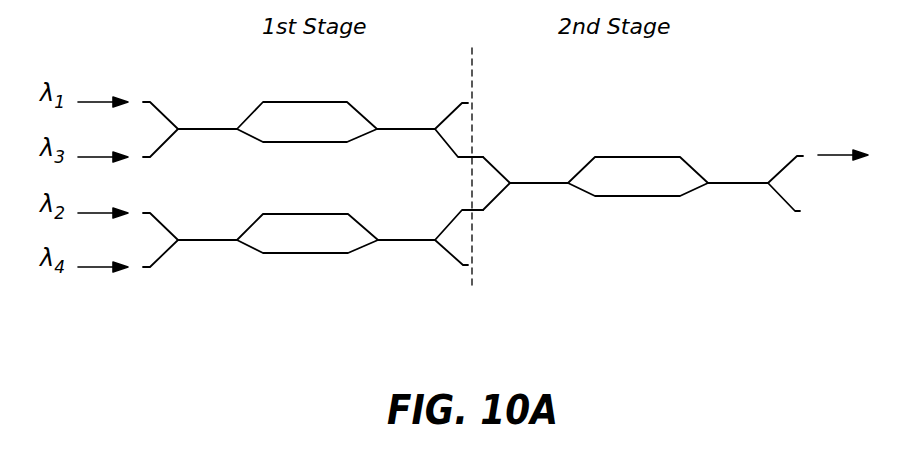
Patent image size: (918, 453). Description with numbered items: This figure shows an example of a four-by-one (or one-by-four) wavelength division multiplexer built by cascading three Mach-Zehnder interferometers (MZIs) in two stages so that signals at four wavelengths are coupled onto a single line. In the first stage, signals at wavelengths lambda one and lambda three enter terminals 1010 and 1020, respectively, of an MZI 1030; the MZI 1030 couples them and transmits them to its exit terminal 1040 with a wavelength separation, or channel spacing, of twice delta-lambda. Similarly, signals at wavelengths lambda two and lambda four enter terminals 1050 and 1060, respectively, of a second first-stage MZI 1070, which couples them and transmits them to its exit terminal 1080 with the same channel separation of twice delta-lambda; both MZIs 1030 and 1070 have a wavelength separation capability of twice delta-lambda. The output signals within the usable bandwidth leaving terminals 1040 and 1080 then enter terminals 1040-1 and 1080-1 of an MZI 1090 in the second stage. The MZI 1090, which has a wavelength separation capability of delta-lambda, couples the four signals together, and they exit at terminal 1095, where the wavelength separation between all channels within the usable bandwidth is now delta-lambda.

The terminal 1010 is at (150, 102).
The terminal 1020 is at (150, 157).
The MZI 1030 is at (283, 148).
The exit terminal 1040 is at (458, 157).
The terminal 1050 is at (150, 213).
The terminal 1060 is at (150, 267).
The MZI 1070 is at (285, 267).
The exit terminal 1080 is at (460, 210).
The terminal 1040-1 is at (483, 157).
The terminal 1080-1 is at (483, 210).
The MZI 1090 is at (643, 212).
The terminal 1095 is at (798, 153).